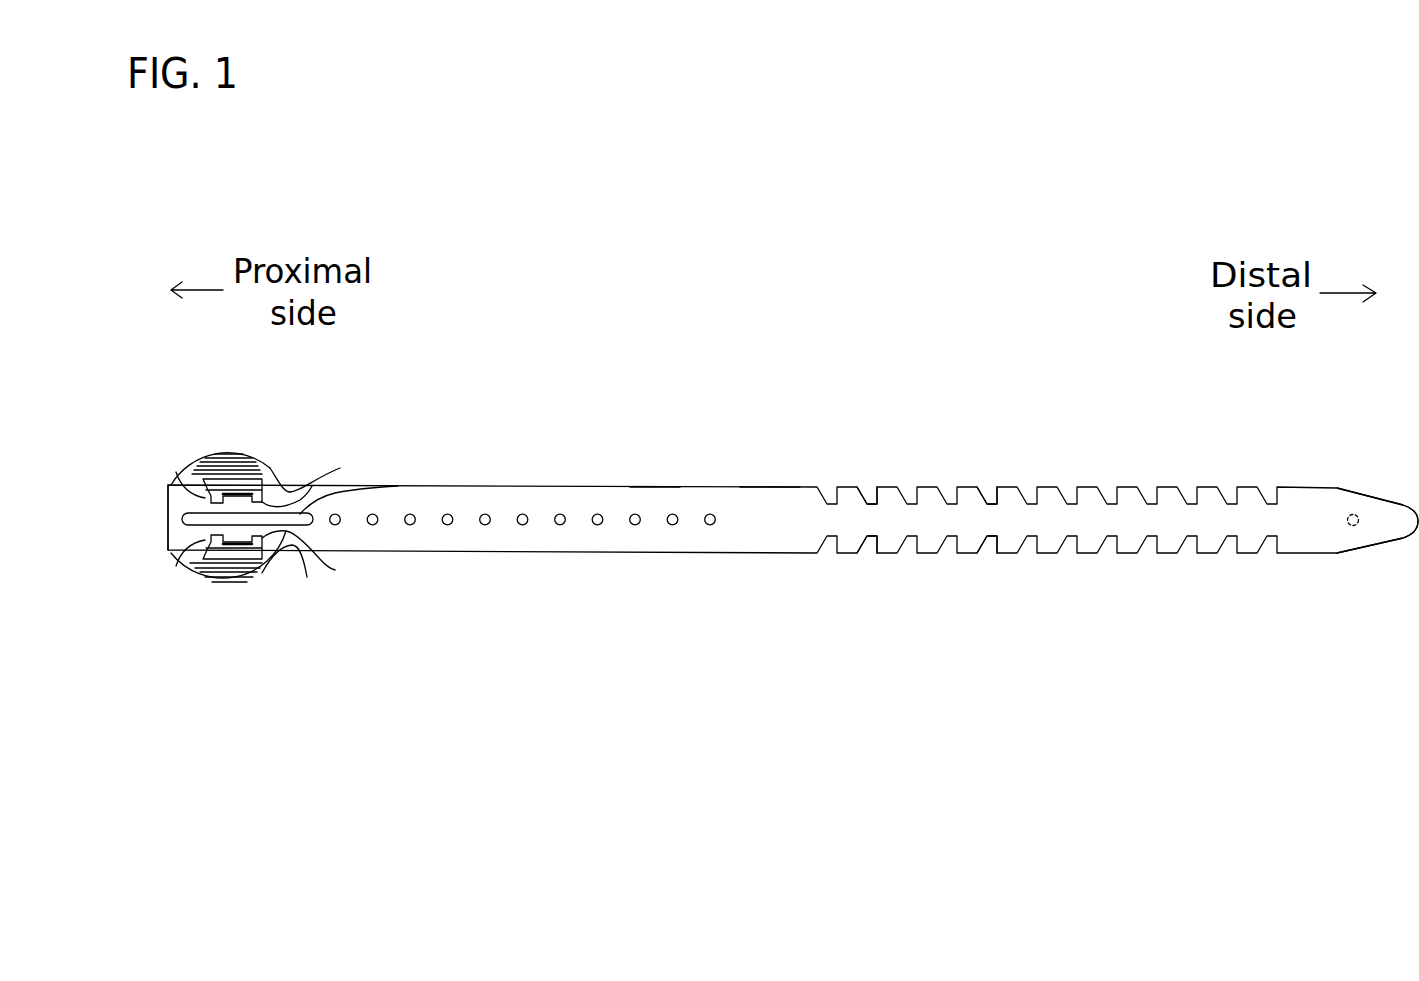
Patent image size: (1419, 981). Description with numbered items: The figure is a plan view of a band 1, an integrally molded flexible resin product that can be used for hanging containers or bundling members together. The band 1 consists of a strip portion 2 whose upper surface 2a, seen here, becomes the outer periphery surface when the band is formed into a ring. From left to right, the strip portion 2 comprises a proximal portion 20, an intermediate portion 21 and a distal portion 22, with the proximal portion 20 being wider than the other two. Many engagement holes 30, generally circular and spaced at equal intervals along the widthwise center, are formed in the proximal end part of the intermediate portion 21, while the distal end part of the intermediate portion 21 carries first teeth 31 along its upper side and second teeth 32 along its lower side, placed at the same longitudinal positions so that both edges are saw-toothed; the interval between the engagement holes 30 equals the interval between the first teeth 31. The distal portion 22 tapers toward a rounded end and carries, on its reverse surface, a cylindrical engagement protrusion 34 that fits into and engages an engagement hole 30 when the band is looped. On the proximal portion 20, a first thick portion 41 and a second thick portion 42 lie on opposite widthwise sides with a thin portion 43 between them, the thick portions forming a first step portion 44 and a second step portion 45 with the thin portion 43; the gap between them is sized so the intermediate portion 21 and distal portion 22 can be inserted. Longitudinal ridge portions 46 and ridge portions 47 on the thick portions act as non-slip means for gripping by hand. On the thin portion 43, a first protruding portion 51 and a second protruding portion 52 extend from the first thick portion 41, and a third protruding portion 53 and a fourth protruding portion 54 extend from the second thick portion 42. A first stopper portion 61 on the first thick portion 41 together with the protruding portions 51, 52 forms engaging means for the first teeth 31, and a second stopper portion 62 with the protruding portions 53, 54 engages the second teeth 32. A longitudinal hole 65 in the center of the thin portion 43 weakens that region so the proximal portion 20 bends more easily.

The band 1 is at (473, 376).
The strip portion 2 is at (712, 479).
The upper surface 2a is at (652, 517).
The proximal portion 20 is at (238, 453).
The intermediate portion 21 is at (763, 487).
The distal portion 22 is at (1303, 487).
The engagement holes 30 is at (579, 568).
The first teeth 31 is at (984, 436).
The second teeth 32 is at (984, 604).
The engagement protrusion 34 is at (1354, 513).
The first thick portion 41 is at (183, 475).
The second thick portion 42 is at (189, 563).
The thin portion 43 is at (182, 498).
The first step portion 44 is at (283, 492).
The second step portion 45 is at (307, 577).
The ridge portions 46 is at (228, 453).
The ridge portions 47 is at (228, 584).
The first protruding portion 51 is at (182, 519).
The second protruding portion 52 is at (340, 469).
The third protruding portion 53 is at (184, 557).
The fourth protruding portion 54 is at (335, 570).
The first stopper portion 61 is at (252, 481).
The second stopper portion 62 is at (247, 557).
The hole 65 is at (396, 486).